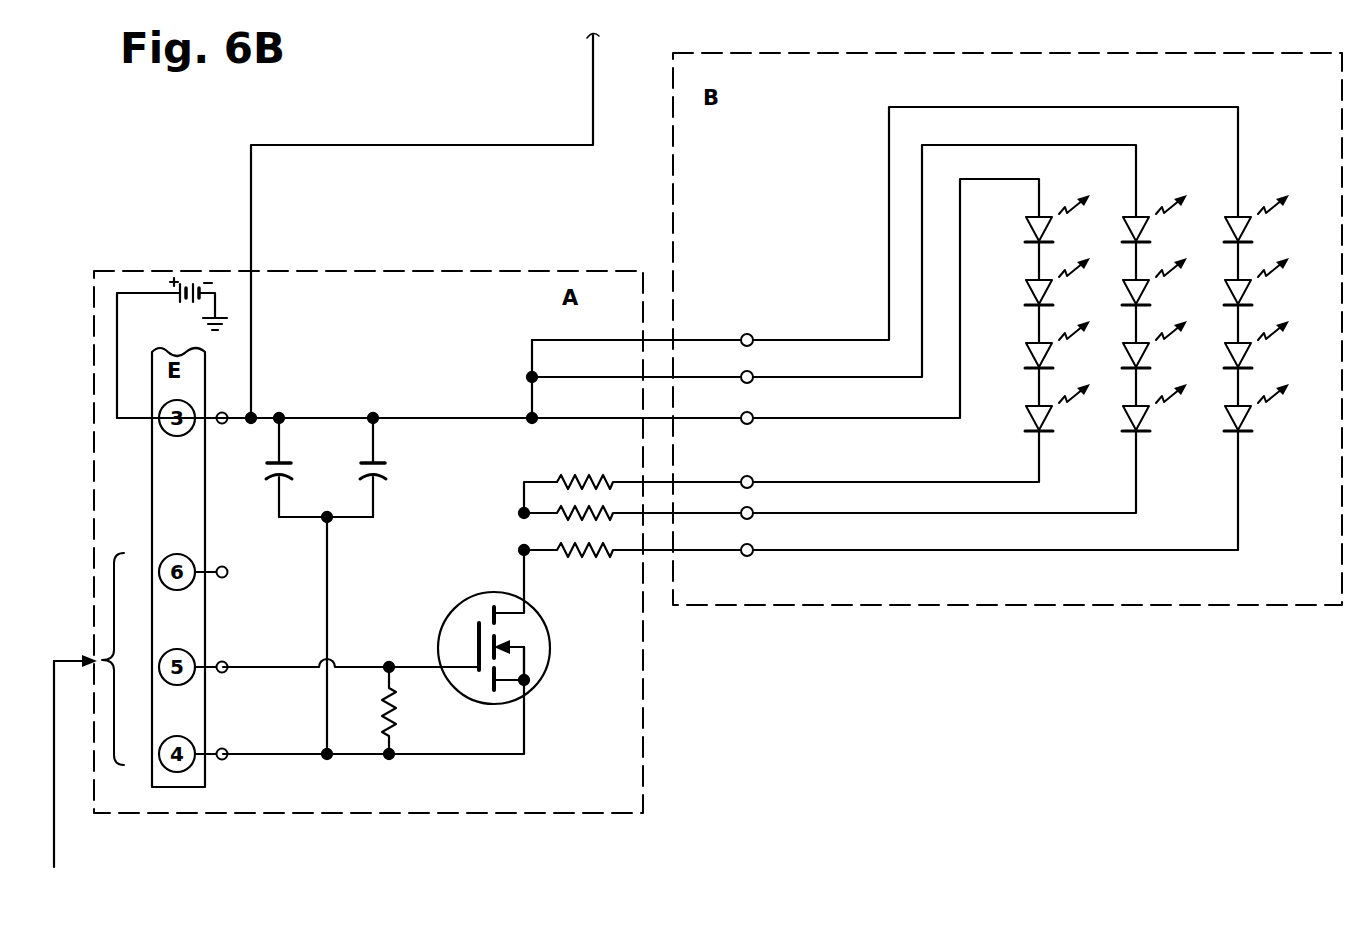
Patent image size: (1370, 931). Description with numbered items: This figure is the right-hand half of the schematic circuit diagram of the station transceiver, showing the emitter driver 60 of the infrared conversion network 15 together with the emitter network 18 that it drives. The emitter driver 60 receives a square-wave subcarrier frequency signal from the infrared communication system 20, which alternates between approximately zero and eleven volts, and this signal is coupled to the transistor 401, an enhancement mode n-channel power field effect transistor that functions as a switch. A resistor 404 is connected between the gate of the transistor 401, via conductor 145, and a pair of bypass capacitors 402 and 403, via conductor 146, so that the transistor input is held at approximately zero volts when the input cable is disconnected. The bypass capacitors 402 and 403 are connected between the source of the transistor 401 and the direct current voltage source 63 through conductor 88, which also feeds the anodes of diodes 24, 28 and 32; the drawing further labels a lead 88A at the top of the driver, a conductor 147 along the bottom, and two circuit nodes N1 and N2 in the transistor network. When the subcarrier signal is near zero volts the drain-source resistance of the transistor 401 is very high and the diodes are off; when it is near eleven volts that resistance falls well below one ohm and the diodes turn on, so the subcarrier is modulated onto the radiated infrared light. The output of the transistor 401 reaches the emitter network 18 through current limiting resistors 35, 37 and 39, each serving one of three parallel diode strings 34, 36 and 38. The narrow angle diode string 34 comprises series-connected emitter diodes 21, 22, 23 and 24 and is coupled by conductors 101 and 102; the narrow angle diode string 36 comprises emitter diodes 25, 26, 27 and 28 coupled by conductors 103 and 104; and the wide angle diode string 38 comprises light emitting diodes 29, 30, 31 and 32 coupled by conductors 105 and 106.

The infrared conversion network 15 is at (608, 228).
The emitter network 18 is at (1220, 632).
The infrared communication system 20 is at (54, 838).
The emitter diode 21 is at (1050, 421).
The emitter diode 22 is at (1050, 358).
The emitter diode 23 is at (1050, 295).
The emitter diode 24 is at (1050, 232).
The emitter diode 25 is at (1147, 421).
The emitter diode 26 is at (1147, 358).
The emitter diode 27 is at (1147, 295).
The emitter diode 28 is at (1147, 232).
The wide angle light emitting diode 29 is at (1249, 421).
The wide angle light emitting diode 30 is at (1249, 358).
The wide angle light emitting diode 31 is at (1249, 295).
The wide angle light emitting diode 32 is at (1249, 232).
The diode string 34 is at (1014, 418).
The current limiting resistor 35 is at (556, 492).
The diode string 36 is at (1115, 456).
The current limiting resistor 37 is at (560, 513).
The diode string 38 is at (1216, 456).
The current limiting resistor 39 is at (582, 560).
The emitter driver 60 is at (643, 712).
The direct current voltage source 63 is at (189, 270).
The conductor 88 is at (412, 418).
The power supply lead 88A is at (593, 70).
The conductor 101 is at (778, 340).
The conductor 102 is at (790, 482).
The conductor 103 is at (798, 377).
The conductor 104 is at (822, 513).
The conductor 105 is at (818, 418).
The conductor 106 is at (858, 550).
The conductor 145 is at (360, 665).
The conductor 146 is at (327, 575).
The ground return line 147 is at (442, 756).
The transistor 401 is at (550, 662).
The bypass capacitor 402 is at (272, 480).
The bypass capacitor 403 is at (388, 478).
The resistor 404 is at (397, 708).
The node N1 is at (532, 418).
The node N2 is at (524, 550).